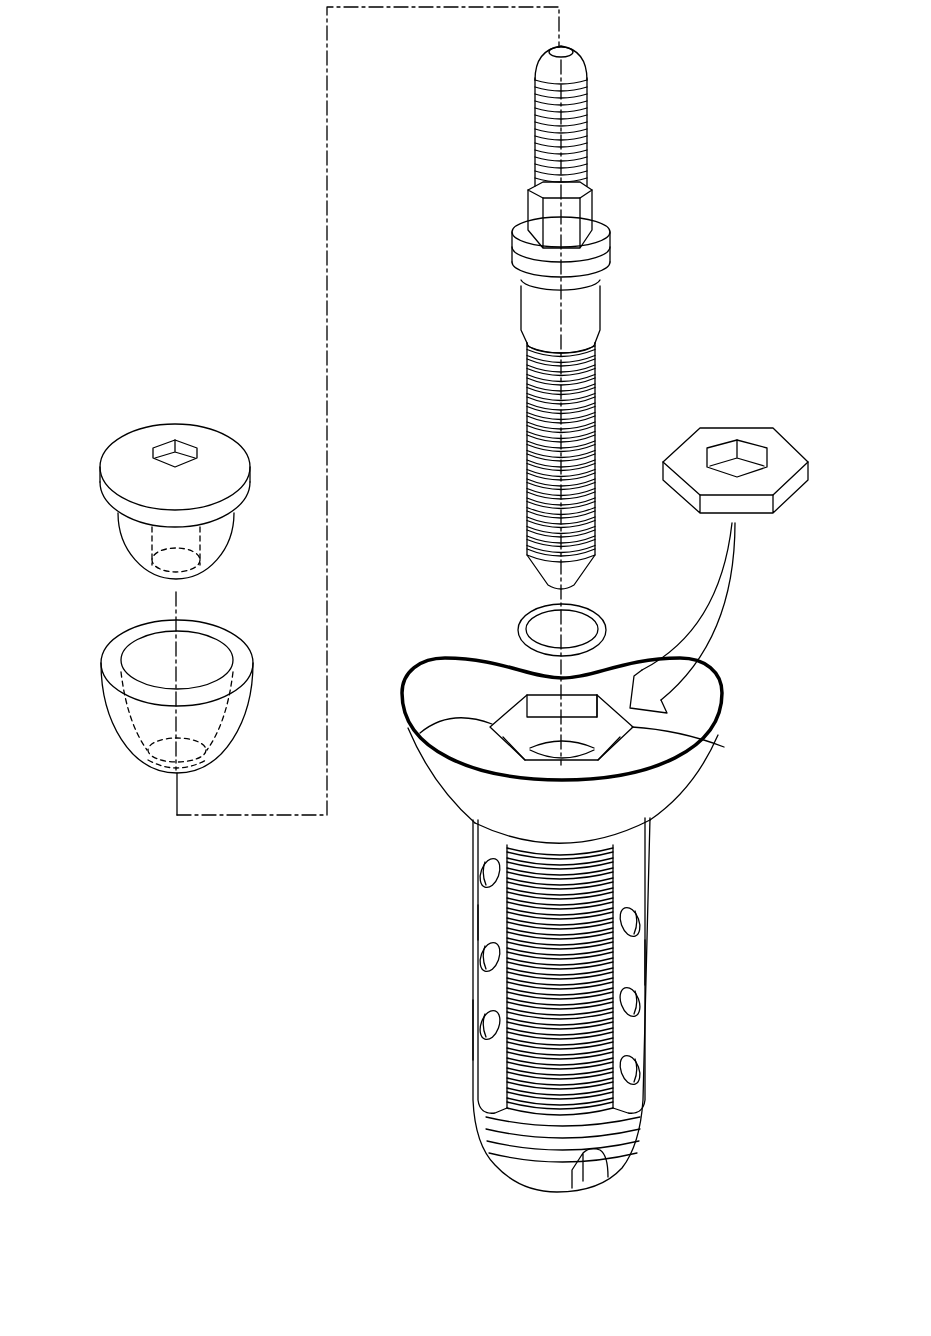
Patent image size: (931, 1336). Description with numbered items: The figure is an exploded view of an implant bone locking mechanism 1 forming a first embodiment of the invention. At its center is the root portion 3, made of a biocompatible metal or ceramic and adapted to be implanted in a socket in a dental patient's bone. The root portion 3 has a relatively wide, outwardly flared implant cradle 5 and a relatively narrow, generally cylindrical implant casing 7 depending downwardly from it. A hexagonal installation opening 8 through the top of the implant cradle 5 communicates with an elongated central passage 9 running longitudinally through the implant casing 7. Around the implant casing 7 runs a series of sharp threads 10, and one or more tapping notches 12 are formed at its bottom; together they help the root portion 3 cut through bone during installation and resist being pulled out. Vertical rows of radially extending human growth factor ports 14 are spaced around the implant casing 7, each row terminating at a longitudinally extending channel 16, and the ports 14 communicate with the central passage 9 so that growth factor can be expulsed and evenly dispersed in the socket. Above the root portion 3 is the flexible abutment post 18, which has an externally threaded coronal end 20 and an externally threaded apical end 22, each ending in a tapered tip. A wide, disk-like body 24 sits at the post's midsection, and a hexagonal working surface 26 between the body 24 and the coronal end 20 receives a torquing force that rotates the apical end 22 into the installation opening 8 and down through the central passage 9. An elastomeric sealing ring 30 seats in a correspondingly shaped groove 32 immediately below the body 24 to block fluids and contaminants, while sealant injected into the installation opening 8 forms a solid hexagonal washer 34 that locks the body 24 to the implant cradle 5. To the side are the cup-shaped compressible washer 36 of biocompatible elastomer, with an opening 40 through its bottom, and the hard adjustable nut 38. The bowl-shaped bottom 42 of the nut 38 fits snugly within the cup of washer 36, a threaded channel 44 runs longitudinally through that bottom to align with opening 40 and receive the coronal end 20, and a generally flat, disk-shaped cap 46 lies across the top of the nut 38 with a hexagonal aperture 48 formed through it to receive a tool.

The implant bone locking mechanism 1 is at (458, 420).
The root portion 3 is at (670, 886).
The implant cradle 5 is at (447, 784).
The implant casing 7 is at (480, 1030).
The installation opening 8 is at (462, 712).
The central passage 9 is at (697, 738).
The sharp threads 10 is at (593, 880).
The tapping notches 12 is at (600, 1165).
The human growth factor ports 14 is at (483, 947).
The longitudinally extending channel 16 is at (486, 994).
The abutment post 18 is at (620, 204).
The coronal end 20 is at (589, 113).
The apical end 22 is at (526, 483).
The body 24 is at (514, 257).
The working surface 26 is at (532, 210).
The elastomeric sealing ring 30 is at (522, 621).
The groove 32 is at (582, 288).
The washer 34 is at (773, 440).
The compressible washer 36 is at (95, 683).
The adjustable nut 38 is at (95, 500).
The opening 40 is at (160, 768).
The bottom 42 is at (224, 548).
The threaded channel 44 is at (150, 548).
The cap 46 is at (122, 453).
The aperture 48 is at (190, 450).